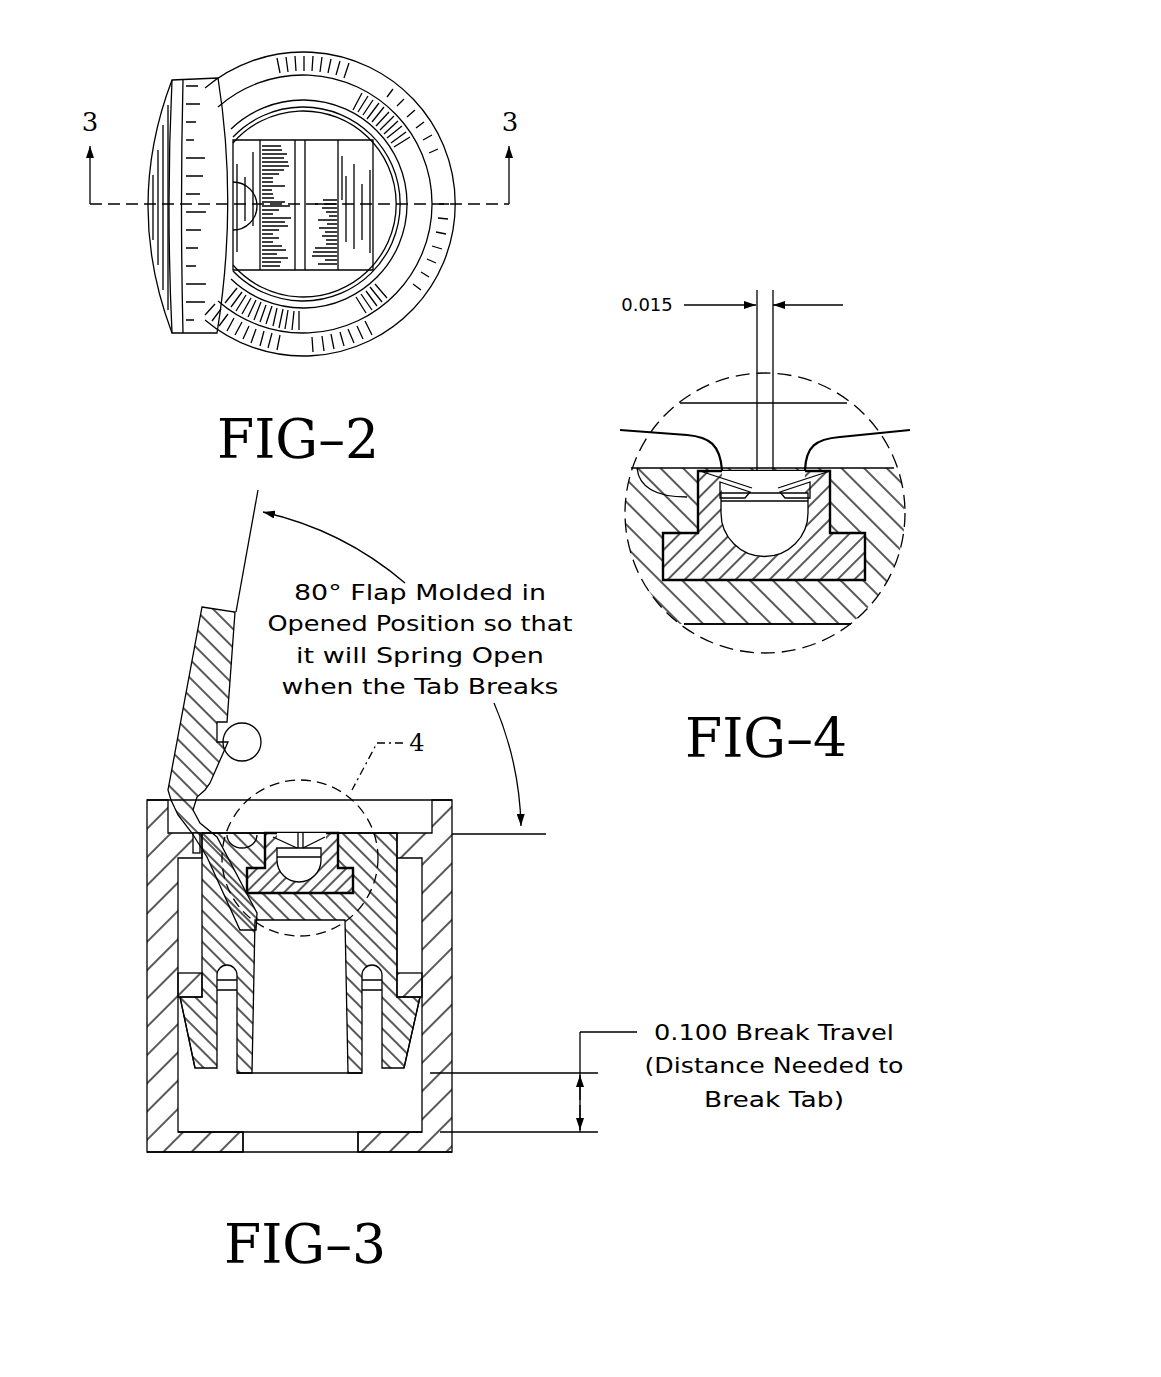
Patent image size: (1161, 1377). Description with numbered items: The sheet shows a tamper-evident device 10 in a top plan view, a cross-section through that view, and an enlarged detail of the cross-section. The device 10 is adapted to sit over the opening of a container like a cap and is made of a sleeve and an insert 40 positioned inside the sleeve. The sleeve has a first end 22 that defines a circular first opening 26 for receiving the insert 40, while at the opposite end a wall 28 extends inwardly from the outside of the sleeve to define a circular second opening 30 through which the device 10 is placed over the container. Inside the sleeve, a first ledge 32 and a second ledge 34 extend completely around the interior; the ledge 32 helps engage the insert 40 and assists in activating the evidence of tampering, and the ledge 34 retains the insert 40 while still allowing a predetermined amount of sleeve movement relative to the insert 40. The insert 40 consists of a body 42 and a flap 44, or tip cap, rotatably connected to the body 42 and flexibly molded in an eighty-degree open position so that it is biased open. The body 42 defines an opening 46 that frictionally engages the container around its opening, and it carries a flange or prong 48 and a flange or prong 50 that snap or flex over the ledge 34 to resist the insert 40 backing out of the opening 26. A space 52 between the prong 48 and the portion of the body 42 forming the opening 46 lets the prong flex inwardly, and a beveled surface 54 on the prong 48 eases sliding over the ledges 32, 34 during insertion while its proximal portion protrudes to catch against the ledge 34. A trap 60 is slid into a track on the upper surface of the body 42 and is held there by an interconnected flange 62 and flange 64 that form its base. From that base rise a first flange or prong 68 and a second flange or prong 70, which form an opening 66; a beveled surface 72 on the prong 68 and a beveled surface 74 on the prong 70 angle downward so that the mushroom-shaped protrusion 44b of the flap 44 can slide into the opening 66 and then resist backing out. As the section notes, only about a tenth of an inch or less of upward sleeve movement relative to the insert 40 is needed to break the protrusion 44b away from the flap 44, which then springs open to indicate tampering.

In FIG. 2, the device 10 is at (473, 72).
In FIG. 3, the device 10 is at (125, 622).
In FIG. 2, the first end 22 is at (240, 63).
In FIG. 4, the first end 22 is at (799, 401).
In FIG. 3, the first end 22 is at (158, 800).
In FIG. 2, the first opening 26 is at (405, 118).
In FIG. 3, the first opening 26 is at (423, 790).
In FIG. 3, the wall 28 is at (425, 1153).
In FIG. 3, the second opening 30 is at (247, 1140).
In FIG. 2, the first ledge 32 is at (402, 262).
In FIG. 3, the first ledge 32 is at (197, 847).
In FIG. 3, the second ledge 34 is at (406, 990).
In FIG. 3, the insert 40 is at (400, 886).
In FIG. 2, the body 42 is at (380, 212).
In FIG. 4, the body 42 is at (875, 525).
In FIG. 3, the body 42 is at (202, 883).
In FIG. 2, the flap 44 is at (182, 305).
In FIG. 3, the flap 44 is at (205, 642).
In FIG. 2, the protrusion 44b is at (243, 212).
In FIG. 3, the protrusion 44b is at (243, 723).
In FIG. 3, the opening 46 is at (312, 1077).
In FIG. 3, the flange or prong 48 is at (408, 1018).
In FIG. 3, the flange or prong 50 is at (197, 1042).
In FIG. 3, the space 52 is at (375, 1082).
In FIG. 3, the beveled surface 54 is at (408, 1036).
In FIG. 2, the trap 60 is at (318, 270).
In FIG. 3, the trap 60 is at (280, 833).
In FIG. 4, the flange 62 is at (805, 580).
In FIG. 4, the flange 64 is at (663, 548).
In FIG. 4, the opening 66 is at (736, 552).
In FIG. 4, the first flange or prong 68 is at (830, 506).
In FIG. 4, the second flange or prong 70 is at (687, 495).
In FIG. 2, the beveled surface 72 is at (318, 155).
In FIG. 4, the beveled surface 72 is at (910, 430).
In FIG. 2, the beveled surface 74 is at (278, 155).
In FIG. 4, the beveled surface 74 is at (620, 430).